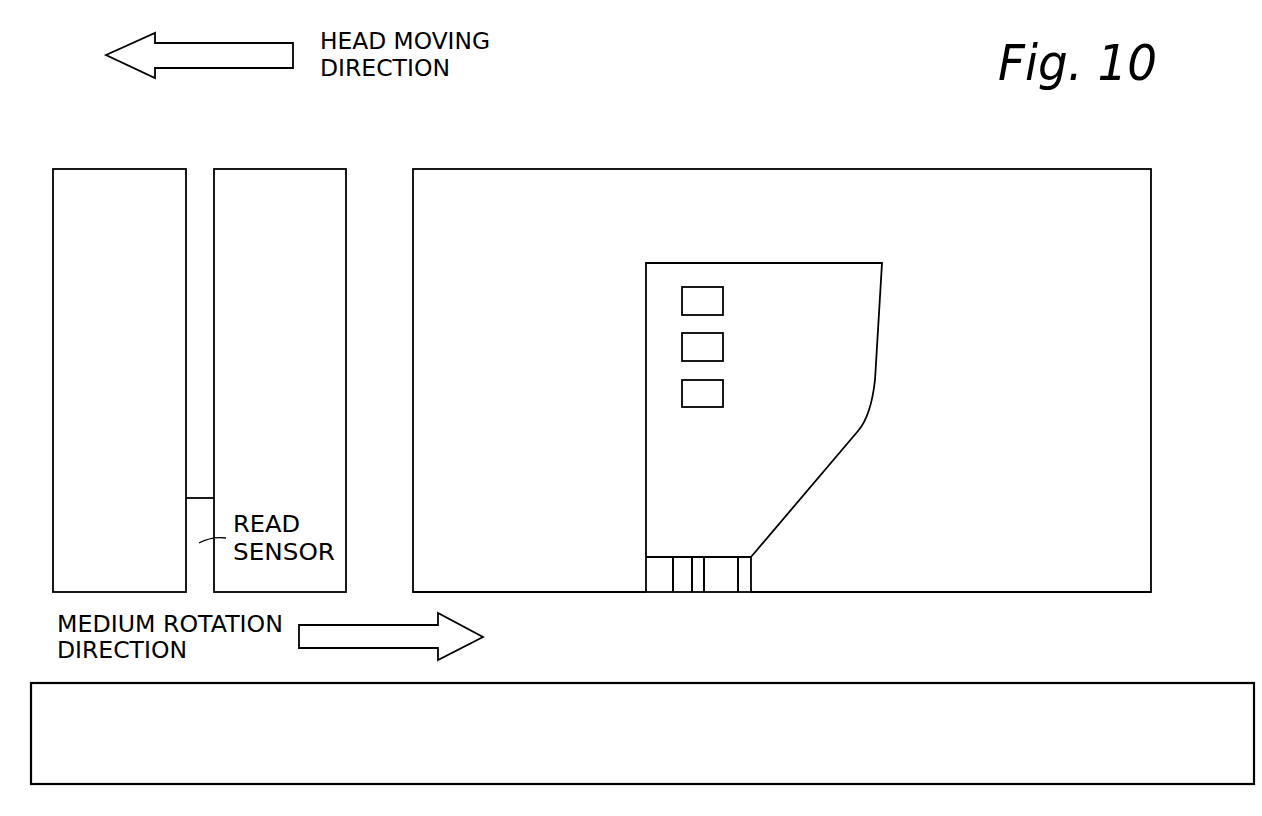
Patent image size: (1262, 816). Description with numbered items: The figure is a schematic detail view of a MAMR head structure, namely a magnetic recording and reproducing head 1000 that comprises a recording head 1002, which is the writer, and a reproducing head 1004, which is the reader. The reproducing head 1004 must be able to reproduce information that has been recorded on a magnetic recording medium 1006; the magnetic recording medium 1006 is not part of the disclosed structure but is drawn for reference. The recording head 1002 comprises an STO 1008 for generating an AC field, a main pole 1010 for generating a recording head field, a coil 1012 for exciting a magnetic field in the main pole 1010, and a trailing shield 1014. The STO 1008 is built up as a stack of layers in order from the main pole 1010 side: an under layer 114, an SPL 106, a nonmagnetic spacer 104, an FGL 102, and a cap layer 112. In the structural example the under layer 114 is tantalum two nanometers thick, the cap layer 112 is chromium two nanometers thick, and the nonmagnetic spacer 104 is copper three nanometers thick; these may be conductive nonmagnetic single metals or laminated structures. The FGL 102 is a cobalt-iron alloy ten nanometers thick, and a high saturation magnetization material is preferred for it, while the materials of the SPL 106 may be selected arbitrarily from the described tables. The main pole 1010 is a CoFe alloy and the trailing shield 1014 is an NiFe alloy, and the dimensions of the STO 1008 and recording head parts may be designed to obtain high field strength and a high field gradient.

The magnetic recording and reproducing head 1000 is at (692, 82).
The recording head 1002 is at (838, 169).
The reproducing head 1004 is at (306, 169).
The magnetic recording medium 1006 is at (1188, 683).
The STO 1008 is at (785, 641).
The main pole 1010 is at (528, 578).
The coil 1012 is at (718, 300).
The trailing shield 1014 is at (936, 578).
The FGL 102 is at (725, 566).
The nonmagnetic spacer 104 is at (700, 578).
The SPL 106 is at (682, 566).
The cap layer 112 is at (745, 578).
The under layer 114 is at (653, 578).